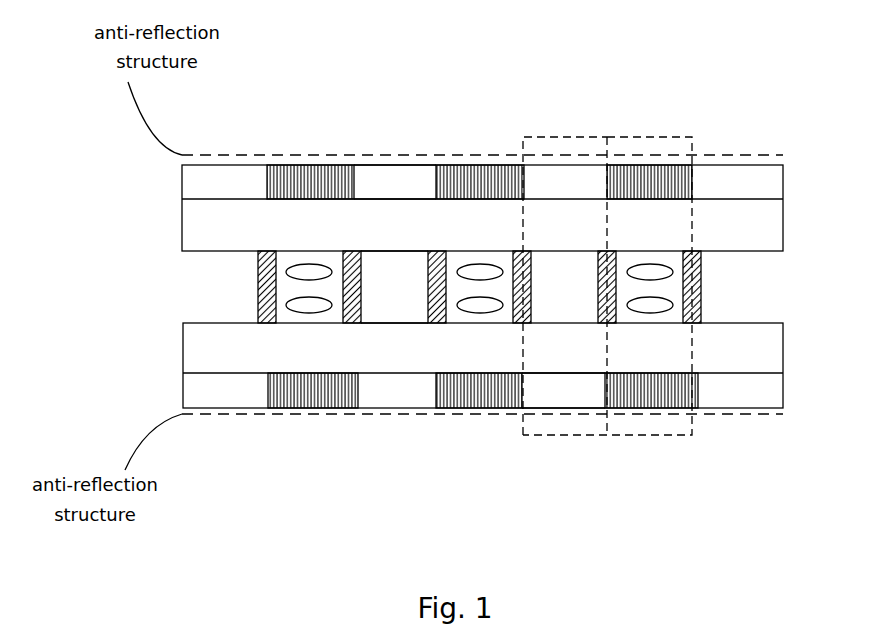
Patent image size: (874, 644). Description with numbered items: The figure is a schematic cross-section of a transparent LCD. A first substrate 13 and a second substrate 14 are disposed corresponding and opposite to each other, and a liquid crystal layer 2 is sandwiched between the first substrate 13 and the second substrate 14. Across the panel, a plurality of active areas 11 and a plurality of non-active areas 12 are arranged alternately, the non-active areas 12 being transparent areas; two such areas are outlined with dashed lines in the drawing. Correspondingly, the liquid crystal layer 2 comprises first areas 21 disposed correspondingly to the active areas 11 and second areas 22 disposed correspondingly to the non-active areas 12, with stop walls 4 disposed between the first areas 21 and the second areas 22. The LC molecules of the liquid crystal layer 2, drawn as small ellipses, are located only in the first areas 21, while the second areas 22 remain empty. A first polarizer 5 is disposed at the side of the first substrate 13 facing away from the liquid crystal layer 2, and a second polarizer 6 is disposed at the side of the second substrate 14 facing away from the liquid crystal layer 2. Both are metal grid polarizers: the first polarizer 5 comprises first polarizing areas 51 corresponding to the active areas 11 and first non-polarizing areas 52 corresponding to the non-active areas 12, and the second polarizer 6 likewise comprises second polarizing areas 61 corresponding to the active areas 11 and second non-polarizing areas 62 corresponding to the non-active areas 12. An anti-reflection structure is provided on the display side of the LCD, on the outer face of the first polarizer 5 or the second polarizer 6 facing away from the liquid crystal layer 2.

The active area 11 is at (643, 133).
The non-active area 12 is at (562, 133).
The first substrate 13 is at (182, 224).
The second substrate 14 is at (182, 345).
The liquid crystal layer 2 is at (479, 381).
The first area 21 is at (325, 287).
The second area 22 is at (387, 280).
The stop wall 4 is at (258, 285).
The first polarizer 5 is at (479, 124).
The first polarizing area 51 is at (318, 176).
The first non-polarizing area 52 is at (395, 147).
The second polarizer 6 is at (483, 450).
The second polarizing area 61 is at (640, 393).
The second non-polarizing area 62 is at (565, 393).